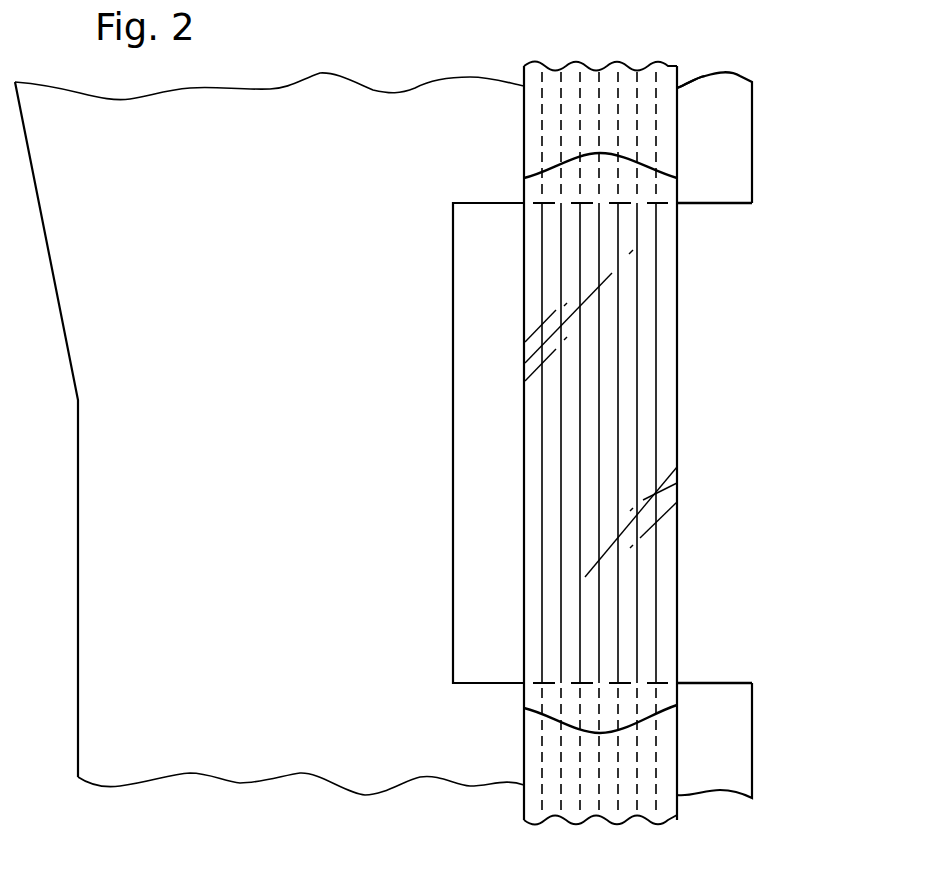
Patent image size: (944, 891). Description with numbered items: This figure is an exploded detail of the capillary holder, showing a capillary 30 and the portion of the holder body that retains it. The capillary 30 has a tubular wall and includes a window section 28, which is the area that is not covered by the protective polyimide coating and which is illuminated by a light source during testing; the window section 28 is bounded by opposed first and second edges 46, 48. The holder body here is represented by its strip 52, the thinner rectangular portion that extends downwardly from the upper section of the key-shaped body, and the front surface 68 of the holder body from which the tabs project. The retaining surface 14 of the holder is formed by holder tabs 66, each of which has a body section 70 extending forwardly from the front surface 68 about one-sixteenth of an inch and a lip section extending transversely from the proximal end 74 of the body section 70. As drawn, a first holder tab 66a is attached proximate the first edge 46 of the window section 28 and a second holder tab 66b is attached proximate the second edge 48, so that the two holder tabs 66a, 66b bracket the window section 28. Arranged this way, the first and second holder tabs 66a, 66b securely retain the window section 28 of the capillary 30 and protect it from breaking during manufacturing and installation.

The retaining surface 14 is at (688, 83).
The window section 28 is at (686, 408).
The capillary 30 is at (608, 66).
The first edge 46 is at (685, 204).
The second edge 48 is at (688, 683).
The strip 52 is at (292, 447).
The holder tab 66 is at (760, 437).
The first holder tab 66a is at (728, 115).
The second holder tab 66b is at (735, 780).
The front surface 68 is at (453, 298).
The body section 70 is at (468, 115).
The proximal end 74 is at (752, 193).